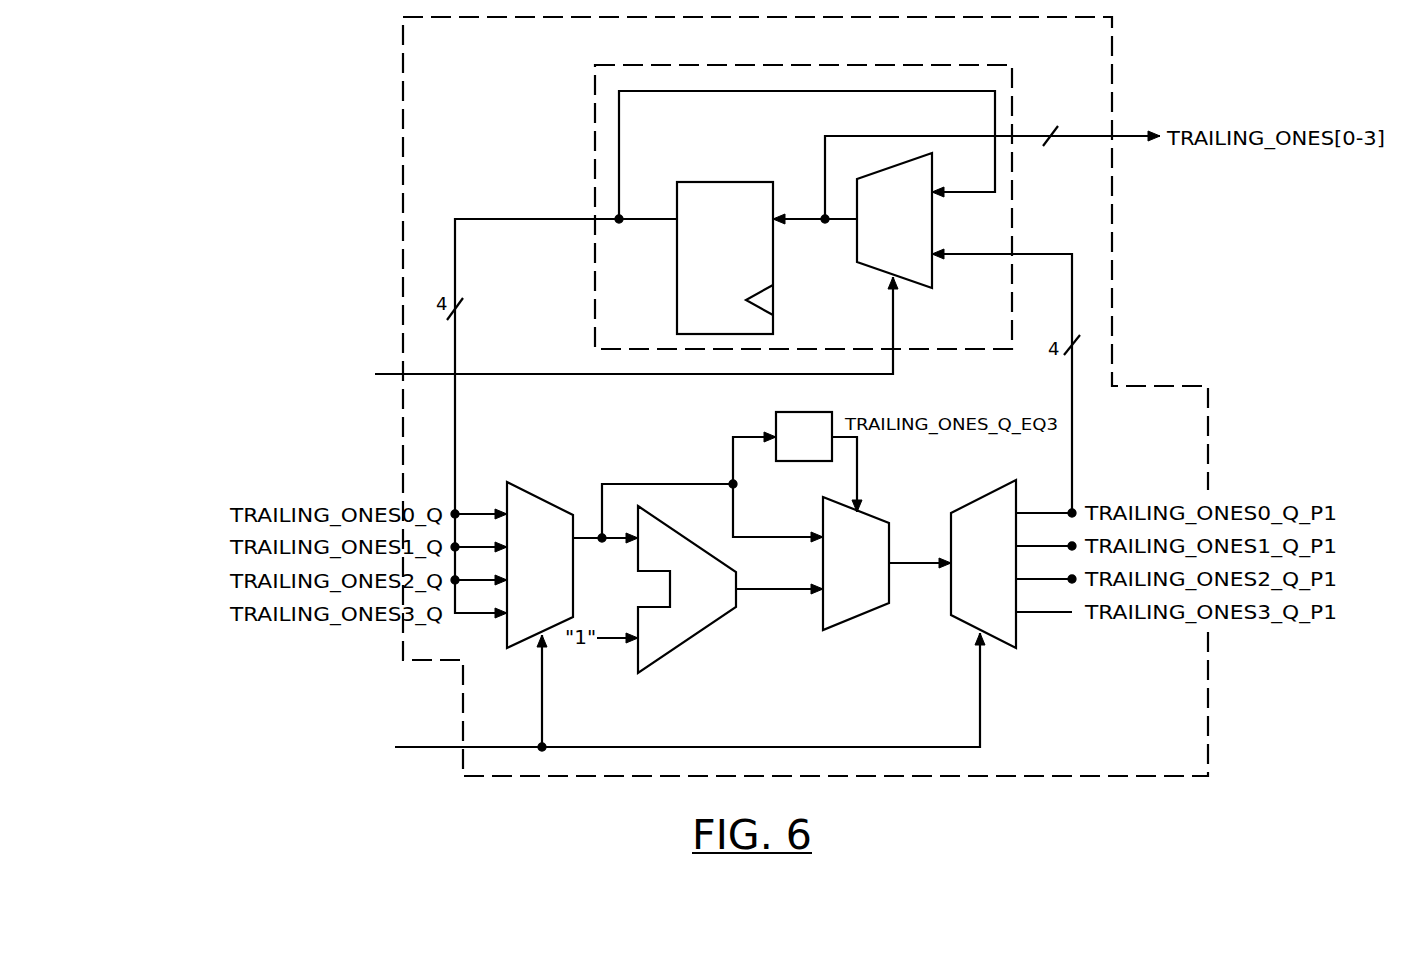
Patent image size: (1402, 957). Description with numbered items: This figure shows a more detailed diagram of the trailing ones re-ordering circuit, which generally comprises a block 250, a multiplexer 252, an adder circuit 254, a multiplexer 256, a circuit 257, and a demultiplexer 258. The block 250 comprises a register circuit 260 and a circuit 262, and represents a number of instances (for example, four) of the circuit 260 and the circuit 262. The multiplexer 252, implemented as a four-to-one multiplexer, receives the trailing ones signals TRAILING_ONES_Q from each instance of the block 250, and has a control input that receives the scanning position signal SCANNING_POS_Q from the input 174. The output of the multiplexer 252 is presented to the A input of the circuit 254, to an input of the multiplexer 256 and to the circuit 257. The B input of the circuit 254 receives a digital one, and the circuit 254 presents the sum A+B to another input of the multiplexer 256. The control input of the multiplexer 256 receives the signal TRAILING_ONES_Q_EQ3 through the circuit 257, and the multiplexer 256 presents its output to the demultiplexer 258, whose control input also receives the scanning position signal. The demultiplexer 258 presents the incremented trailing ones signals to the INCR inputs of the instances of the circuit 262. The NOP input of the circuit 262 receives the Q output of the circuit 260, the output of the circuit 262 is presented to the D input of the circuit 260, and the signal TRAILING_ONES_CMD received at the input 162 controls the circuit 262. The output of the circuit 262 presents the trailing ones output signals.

The block (or circuit) 250 is at (668, 65).
The multiplexer circuit 252 is at (522, 491).
The block (or circuit) 254 is at (710, 625).
The multiplexer circuit 256 is at (871, 514).
The block (or circuit) 257 is at (810, 412).
The demultiplexer circuit 258 is at (991, 492).
The block (or circuit) 260 is at (706, 182).
The block (or circuit) 262 is at (870, 267).
The input 162 is at (398, 376).
The input 174 is at (458, 748).